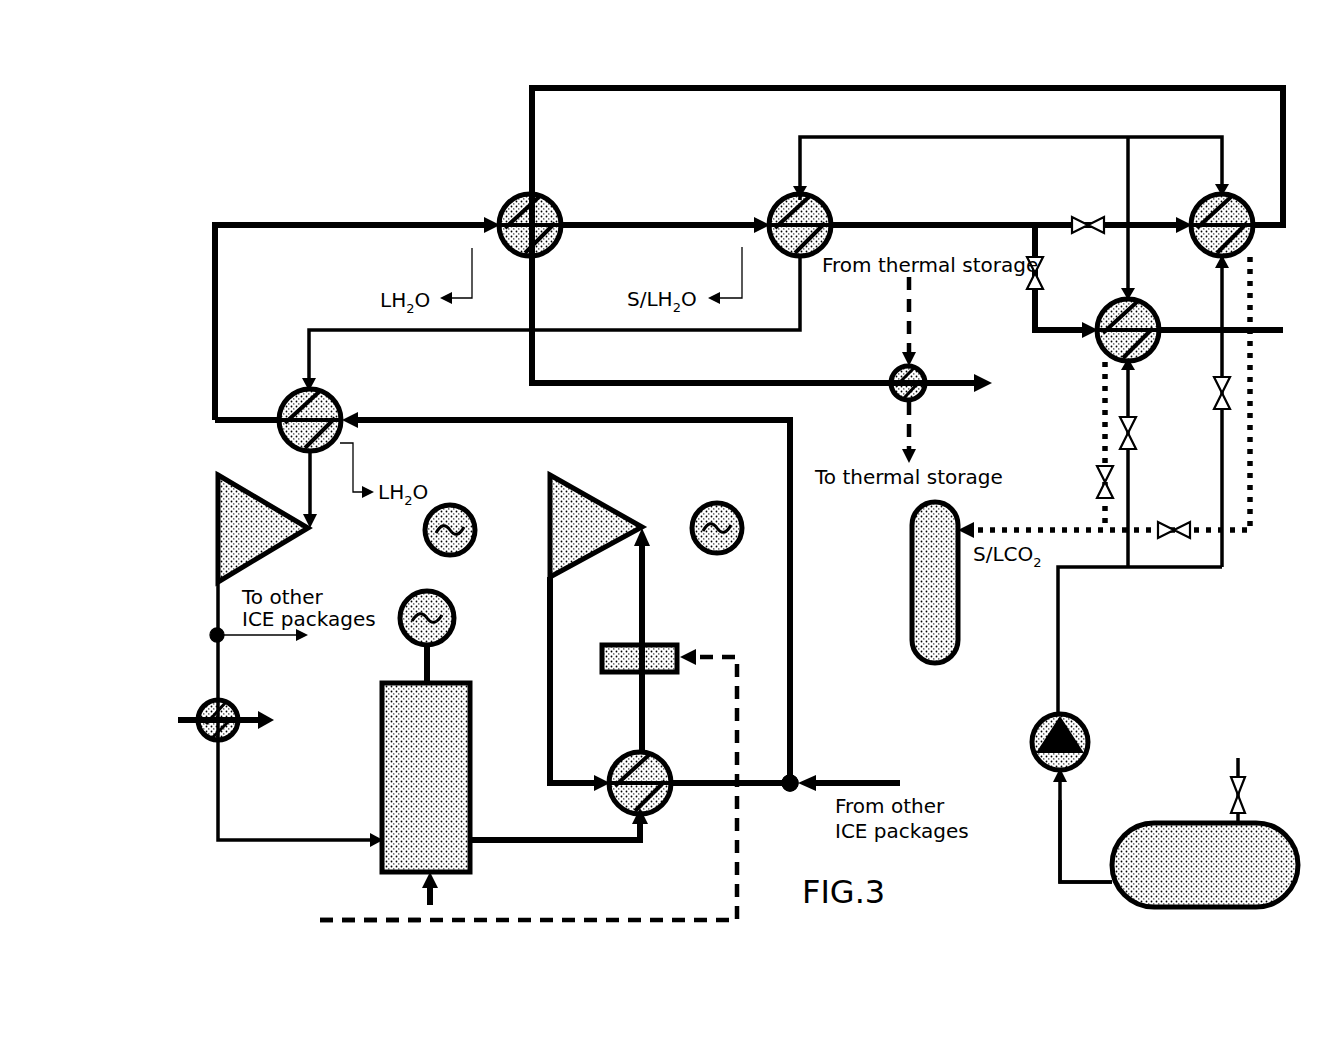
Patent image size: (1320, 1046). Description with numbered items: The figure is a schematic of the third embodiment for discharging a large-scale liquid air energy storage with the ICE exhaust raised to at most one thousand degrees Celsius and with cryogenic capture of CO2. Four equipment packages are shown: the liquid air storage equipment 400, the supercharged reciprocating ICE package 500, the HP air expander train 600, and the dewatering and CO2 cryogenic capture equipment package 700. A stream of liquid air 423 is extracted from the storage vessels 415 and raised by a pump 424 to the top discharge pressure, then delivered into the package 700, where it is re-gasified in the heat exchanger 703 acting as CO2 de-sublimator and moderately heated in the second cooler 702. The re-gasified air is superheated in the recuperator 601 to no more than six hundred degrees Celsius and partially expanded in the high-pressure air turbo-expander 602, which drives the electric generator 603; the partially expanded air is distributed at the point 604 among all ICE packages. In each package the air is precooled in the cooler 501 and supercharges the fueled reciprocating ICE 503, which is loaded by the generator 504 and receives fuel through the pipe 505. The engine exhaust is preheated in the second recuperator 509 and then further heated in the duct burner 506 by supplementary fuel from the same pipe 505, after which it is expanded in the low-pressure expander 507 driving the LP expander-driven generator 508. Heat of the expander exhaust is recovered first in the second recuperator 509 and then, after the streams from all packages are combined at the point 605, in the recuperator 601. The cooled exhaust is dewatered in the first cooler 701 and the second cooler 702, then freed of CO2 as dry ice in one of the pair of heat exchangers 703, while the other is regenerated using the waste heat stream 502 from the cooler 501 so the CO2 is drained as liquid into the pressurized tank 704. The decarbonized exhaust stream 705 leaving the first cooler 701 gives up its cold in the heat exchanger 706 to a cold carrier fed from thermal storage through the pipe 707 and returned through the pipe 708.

The liquid air storage equipment 400 is at (1246, 684).
The storage vessels 415 is at (1176, 823).
The stream of liquid air 423 is at (1057, 852).
The pump 424 is at (1034, 756).
The supercharged reciprocating ICE package 500 is at (231, 896).
The cooler 501 is at (232, 738).
The waste heat stream 502 is at (250, 712).
The fueled reciprocating ICE 503 is at (382, 748).
The generator 504 is at (456, 606).
The pipe 505 is at (326, 917).
The duct burner 506 is at (667, 642).
The low-pressure expander 507 is at (573, 480).
The LP expander-driven generator 508 is at (720, 503).
The second recuperator 509 is at (665, 814).
The HP air expander train 600 is at (381, 378).
The recuperator 601 is at (296, 389).
The high-pressure air turbo-expander 602 is at (296, 545).
The electric generator 603 is at (466, 507).
The point 604 is at (212, 628).
The point 605 is at (800, 776).
The dewatering and CO2 cryogenic capture equipment package 700 is at (243, 97).
The first cooler 701 is at (507, 200).
The second cooler 702 is at (824, 206).
The heat exchanger 703 is at (1202, 256).
The pressurized tank 704 is at (960, 600).
The decarbonized exhaust stream 705 is at (535, 308).
The heat exchanger 706 is at (895, 372).
The pipe 707 is at (912, 340).
The pipe 708 is at (912, 438).